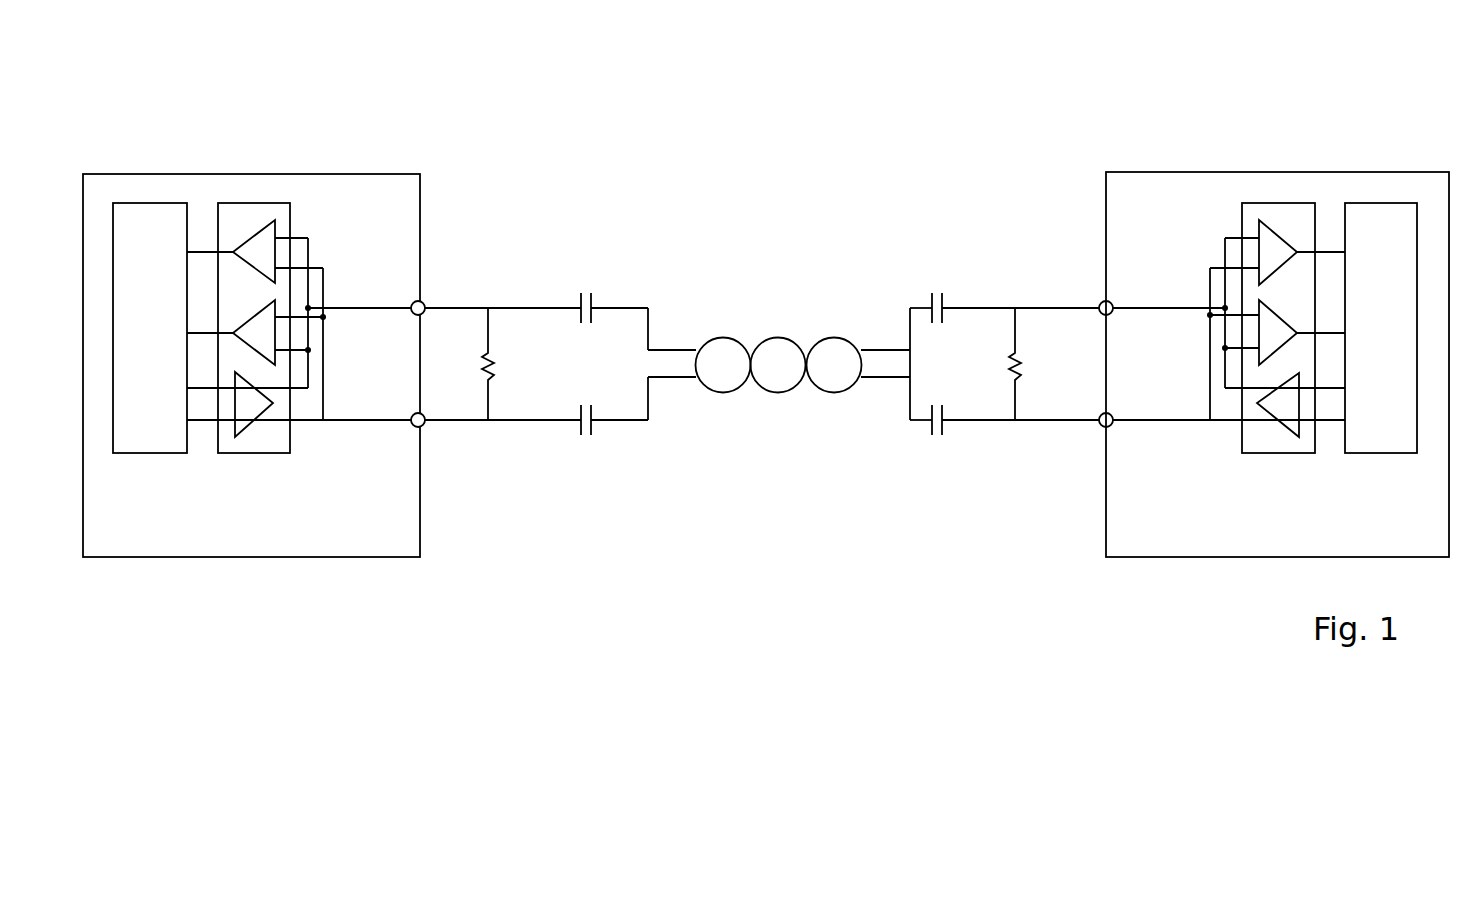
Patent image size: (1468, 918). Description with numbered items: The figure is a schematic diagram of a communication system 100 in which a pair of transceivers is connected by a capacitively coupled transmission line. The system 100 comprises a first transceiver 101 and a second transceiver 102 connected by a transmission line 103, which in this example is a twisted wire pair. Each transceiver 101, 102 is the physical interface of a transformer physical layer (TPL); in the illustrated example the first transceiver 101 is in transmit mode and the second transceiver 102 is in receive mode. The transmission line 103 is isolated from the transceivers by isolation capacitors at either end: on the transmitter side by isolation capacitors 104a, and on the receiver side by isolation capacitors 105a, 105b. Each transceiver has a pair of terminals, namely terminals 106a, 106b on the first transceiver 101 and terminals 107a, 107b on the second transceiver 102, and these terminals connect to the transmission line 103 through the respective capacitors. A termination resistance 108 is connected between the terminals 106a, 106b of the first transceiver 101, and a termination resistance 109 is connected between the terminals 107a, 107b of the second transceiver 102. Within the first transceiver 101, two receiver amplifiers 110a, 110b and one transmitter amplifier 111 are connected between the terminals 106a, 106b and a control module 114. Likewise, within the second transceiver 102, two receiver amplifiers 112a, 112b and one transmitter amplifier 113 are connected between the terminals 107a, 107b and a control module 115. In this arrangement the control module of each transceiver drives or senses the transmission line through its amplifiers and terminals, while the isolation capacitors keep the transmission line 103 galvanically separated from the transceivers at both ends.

The system 100 is at (170, 81).
The first transceiver 101 is at (402, 172).
The second transceiver 102 is at (1108, 172).
The transmission line 103 is at (828, 337).
The isolation capacitor 104a is at (594, 303).
The isolation capacitor 105a is at (945, 302).
The isolation capacitor 105b is at (945, 427).
The terminal 106a is at (424, 302).
The terminal 106b is at (425, 427).
The terminal 107a is at (1099, 300).
The terminal 107b is at (1098, 427).
The termination resistance Rterm 108 is at (490, 357).
The termination resistance Rterm 109 is at (1018, 355).
The receiver amplifier RX 110a is at (274, 250).
The receiver amplifier RX 110b is at (276, 316).
The transmitter amplifier TX 111 is at (265, 408).
The receiver amplifier RX 112a is at (1257, 247).
The receiver amplifier RX 112b is at (1257, 327).
The transmitter amplifier TX 113 is at (1282, 408).
The control module 114 is at (136, 349).
The control module 115 is at (1367, 349).